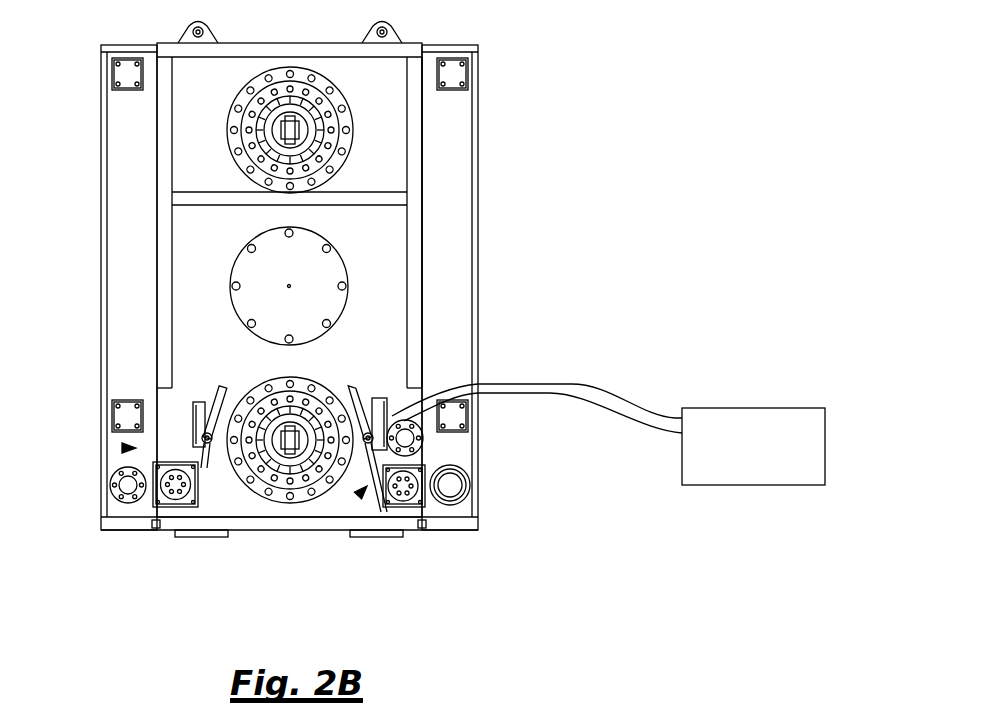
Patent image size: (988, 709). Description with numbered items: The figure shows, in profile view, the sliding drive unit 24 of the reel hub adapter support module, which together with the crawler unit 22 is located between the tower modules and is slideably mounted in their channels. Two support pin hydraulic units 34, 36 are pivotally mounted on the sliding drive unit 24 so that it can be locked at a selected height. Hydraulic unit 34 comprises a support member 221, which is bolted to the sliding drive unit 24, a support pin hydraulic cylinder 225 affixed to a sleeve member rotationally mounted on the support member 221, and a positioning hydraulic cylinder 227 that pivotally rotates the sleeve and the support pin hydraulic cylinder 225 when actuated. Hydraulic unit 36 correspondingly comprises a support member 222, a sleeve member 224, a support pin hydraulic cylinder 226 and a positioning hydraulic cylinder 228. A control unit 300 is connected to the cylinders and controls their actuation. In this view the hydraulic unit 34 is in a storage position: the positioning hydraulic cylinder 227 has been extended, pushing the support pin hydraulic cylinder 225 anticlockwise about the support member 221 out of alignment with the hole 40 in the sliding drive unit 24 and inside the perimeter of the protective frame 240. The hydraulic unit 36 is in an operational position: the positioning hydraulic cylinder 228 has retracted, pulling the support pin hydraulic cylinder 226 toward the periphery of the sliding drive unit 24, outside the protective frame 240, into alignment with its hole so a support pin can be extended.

The sliding drive unit 24 is at (115, 270).
The crawler unit 22 is at (463, 456).
The protective frame 240 is at (418, 232).
The positioning hydraulic cylinder 228 is at (220, 388).
The positioning hydraulic cylinder 227 is at (356, 389).
The support pin hydraulic unit 36 is at (123, 448).
The support pin hydraulic unit 34 is at (358, 495).
The support pin hydraulic cylinder 226 is at (110, 488).
The support pin hydraulic cylinder 225 is at (423, 444).
The support member 222 is at (179, 500).
The sleeve member 224 is at (173, 497).
The support member 221 is at (402, 501).
The hole 40 is at (456, 488).
The control unit 300 is at (825, 408).